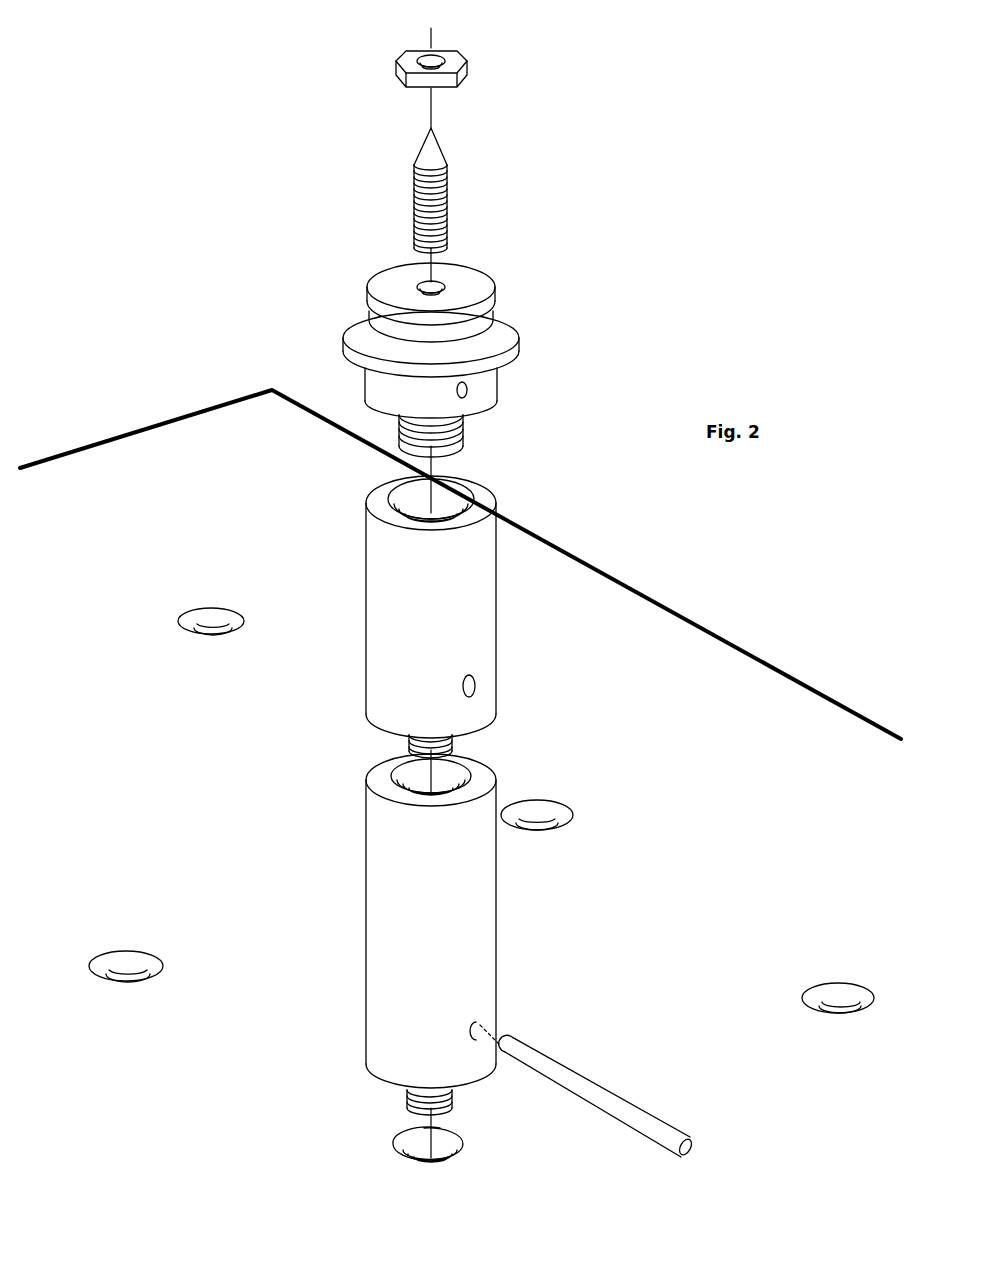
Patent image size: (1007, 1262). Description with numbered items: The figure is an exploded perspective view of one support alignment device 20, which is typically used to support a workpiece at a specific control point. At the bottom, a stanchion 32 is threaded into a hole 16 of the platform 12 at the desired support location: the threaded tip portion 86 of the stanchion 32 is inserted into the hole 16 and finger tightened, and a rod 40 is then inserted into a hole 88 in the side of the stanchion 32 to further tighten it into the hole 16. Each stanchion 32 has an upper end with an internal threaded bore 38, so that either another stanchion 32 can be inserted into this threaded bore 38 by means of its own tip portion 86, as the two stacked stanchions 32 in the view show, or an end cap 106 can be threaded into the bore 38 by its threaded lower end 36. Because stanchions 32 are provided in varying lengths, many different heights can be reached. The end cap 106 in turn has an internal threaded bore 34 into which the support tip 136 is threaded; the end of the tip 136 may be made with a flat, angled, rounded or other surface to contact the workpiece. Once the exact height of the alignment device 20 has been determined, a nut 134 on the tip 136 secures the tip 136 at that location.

The platform 12 is at (175, 418).
The hole 16 is at (452, 1157).
The support alignment device 20 is at (290, 188).
The stanchion 32 is at (468, 768).
The internal threaded bore 34 is at (433, 285).
The threaded end 36 is at (465, 440).
The internal threaded bore 38 is at (450, 500).
The rod 40 is at (587, 1085).
The threaded tip portion 86 is at (410, 745).
The hole 88 is at (472, 1022).
The end cap 106 is at (468, 334).
The nut 134 is at (443, 45).
The support tip 136 is at (448, 180).